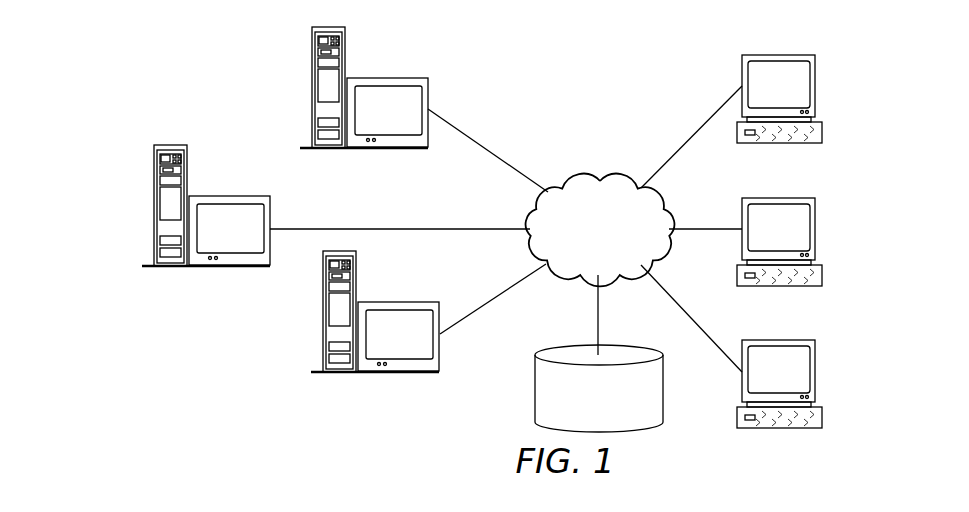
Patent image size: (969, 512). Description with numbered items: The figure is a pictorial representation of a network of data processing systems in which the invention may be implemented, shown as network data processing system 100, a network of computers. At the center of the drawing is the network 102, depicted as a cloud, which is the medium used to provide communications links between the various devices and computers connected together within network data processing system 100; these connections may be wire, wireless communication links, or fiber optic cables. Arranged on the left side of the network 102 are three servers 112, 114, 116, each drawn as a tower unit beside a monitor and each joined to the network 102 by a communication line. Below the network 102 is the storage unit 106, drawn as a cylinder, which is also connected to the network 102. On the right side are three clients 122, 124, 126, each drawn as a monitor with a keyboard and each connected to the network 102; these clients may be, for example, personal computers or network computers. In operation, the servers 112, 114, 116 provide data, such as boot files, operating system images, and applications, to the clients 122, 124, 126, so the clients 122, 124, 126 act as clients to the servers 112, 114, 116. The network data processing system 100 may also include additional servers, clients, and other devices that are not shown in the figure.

The network data processing system 100 is at (649, 61).
The network 102 is at (568, 181).
The storage unit 106 is at (535, 390).
The server 112 is at (323, 322).
The server 114 is at (154, 200).
The server 116 is at (312, 82).
The client 122 is at (815, 85).
The client 124 is at (815, 229).
The client 126 is at (815, 372).